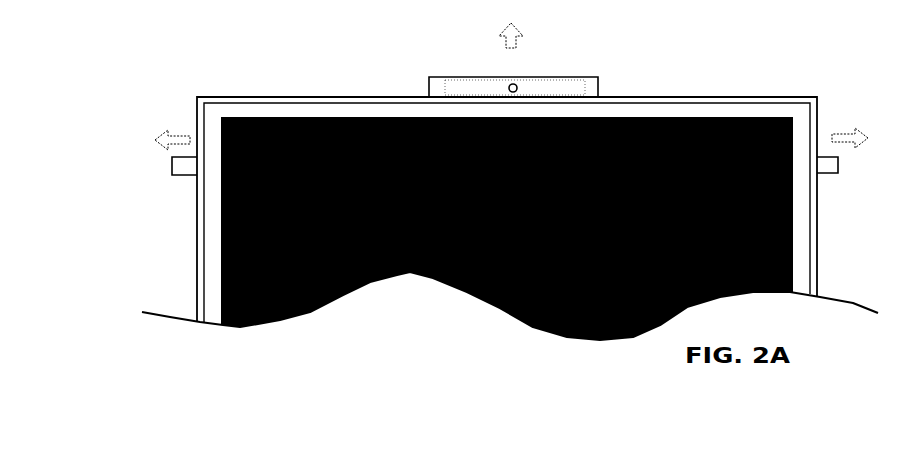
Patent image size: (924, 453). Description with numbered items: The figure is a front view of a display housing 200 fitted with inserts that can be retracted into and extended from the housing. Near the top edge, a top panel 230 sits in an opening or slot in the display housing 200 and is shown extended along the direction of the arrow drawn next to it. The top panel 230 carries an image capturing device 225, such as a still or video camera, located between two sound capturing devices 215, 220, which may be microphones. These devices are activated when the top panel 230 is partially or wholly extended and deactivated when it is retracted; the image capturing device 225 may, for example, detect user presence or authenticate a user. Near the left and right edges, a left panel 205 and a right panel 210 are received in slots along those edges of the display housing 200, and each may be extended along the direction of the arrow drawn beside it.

The display housing 200 is at (510, 240).
The left panel 205 is at (166, 169).
The right panel 210 is at (823, 175).
The sound capturing device 215 is at (438, 89).
The sound capturing device 220 is at (598, 88).
The image capturing device 225 is at (520, 85).
The top panel 230 is at (481, 77).